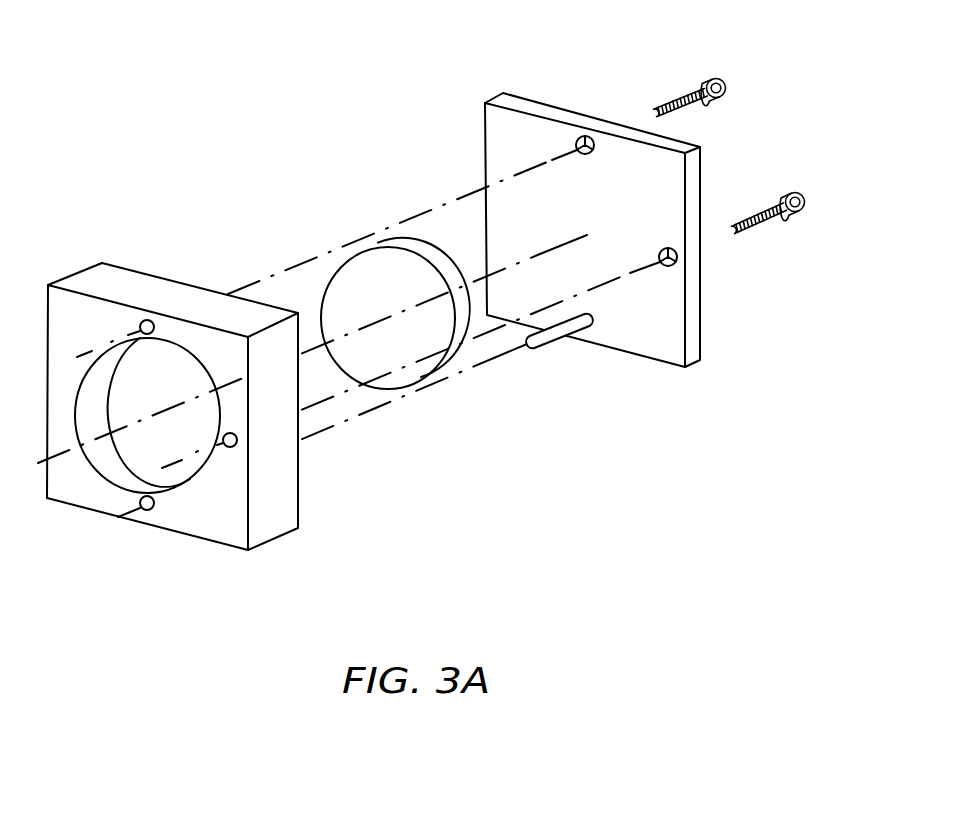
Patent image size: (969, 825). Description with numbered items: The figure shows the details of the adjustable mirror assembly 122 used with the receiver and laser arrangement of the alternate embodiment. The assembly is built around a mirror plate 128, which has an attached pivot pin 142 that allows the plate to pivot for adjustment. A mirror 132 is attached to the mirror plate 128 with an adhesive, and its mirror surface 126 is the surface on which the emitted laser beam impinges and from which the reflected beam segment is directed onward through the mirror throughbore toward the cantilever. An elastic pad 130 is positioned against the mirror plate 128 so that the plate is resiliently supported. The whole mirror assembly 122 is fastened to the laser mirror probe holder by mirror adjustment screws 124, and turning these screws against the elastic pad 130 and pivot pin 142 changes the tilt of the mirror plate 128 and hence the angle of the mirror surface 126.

The mirror assembly 122 is at (298, 178).
The mirror adjustment screws 124 is at (762, 205).
The mirror surface 126 is at (456, 372).
The mirror plate 128 is at (483, 130).
The elastic pad 130 is at (298, 477).
The mirror 132 is at (457, 353).
The pivot pin 142 is at (546, 344).